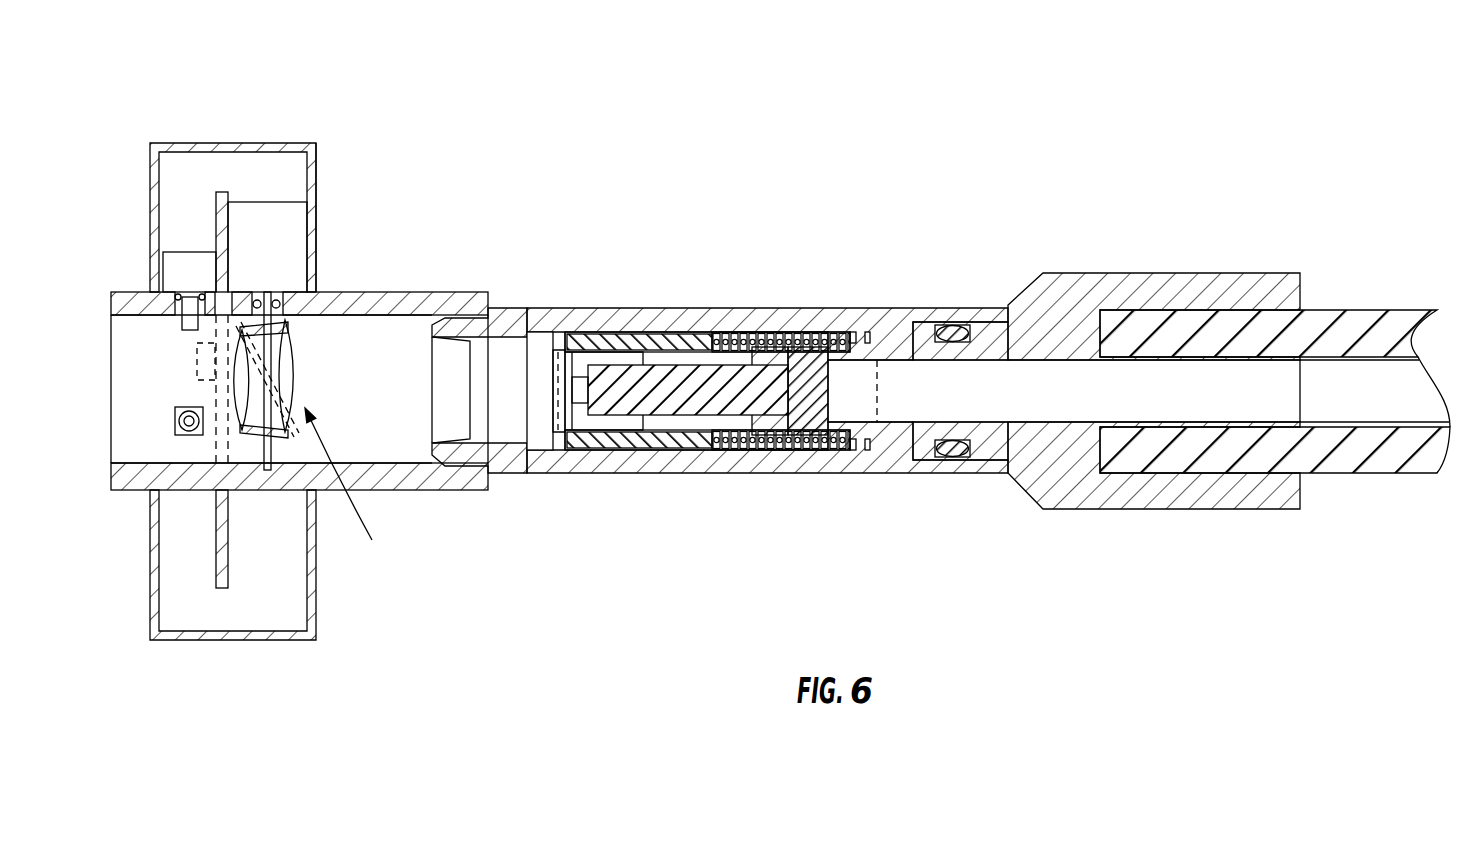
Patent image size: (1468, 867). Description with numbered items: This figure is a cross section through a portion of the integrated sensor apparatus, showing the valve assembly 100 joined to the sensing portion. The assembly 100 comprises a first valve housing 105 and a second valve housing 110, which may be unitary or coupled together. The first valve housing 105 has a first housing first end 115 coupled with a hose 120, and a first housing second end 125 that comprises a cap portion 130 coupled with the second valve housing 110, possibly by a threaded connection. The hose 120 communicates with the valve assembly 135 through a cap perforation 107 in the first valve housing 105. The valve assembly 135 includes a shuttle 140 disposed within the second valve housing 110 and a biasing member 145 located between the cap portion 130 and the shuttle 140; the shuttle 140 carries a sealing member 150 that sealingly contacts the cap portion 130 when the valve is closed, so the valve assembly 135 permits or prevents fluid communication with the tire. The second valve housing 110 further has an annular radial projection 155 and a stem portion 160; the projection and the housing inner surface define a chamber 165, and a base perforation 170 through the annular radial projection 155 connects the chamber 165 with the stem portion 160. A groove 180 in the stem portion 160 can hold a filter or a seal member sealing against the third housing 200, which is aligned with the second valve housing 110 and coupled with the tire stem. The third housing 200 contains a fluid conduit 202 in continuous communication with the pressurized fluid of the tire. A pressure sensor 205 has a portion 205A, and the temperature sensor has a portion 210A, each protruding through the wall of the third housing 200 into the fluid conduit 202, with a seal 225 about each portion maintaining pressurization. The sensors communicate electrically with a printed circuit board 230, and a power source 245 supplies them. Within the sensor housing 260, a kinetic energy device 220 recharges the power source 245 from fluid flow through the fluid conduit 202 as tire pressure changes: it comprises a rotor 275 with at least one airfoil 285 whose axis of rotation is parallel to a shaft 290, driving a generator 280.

The assembly 100 is at (1305, 124).
The first valve housing 105 is at (1180, 273).
The cap perforation 107 is at (920, 385).
The second valve housing 110 is at (672, 310).
The first housing first end 115 is at (1300, 292).
The hose 120 is at (1365, 478).
The first housing second end 125 is at (910, 330).
The cap portion 130 is at (857, 333).
The valve assembly 135 is at (659, 480).
The shuttle 140 is at (630, 333).
The biasing member 145 is at (735, 450).
The sealing member 150 is at (800, 405).
The annular radial projection 155 is at (555, 440).
The stem portion 160 is at (452, 468).
The chamber 165 is at (596, 417).
The base perforation 170 is at (558, 385).
The groove 180 is at (538, 333).
The third housing 200 is at (488, 478).
The fluid conduit 202 is at (360, 330).
The pressure sensor 205 is at (193, 253).
The portion of pressure sensor 205A is at (188, 312).
The portion of temperature sensor 210A is at (189, 424).
The kinetic energy device 220 is at (285, 186).
The seal 225 is at (178, 293).
The printed circuit board 230 is at (216, 198).
The power source 245 is at (205, 360).
The sensor housing 260 is at (316, 172).
The rotor 275 is at (350, 491).
The generator 280 is at (250, 215).
The airfoil 285 is at (290, 322).
The shaft 290 is at (268, 452).